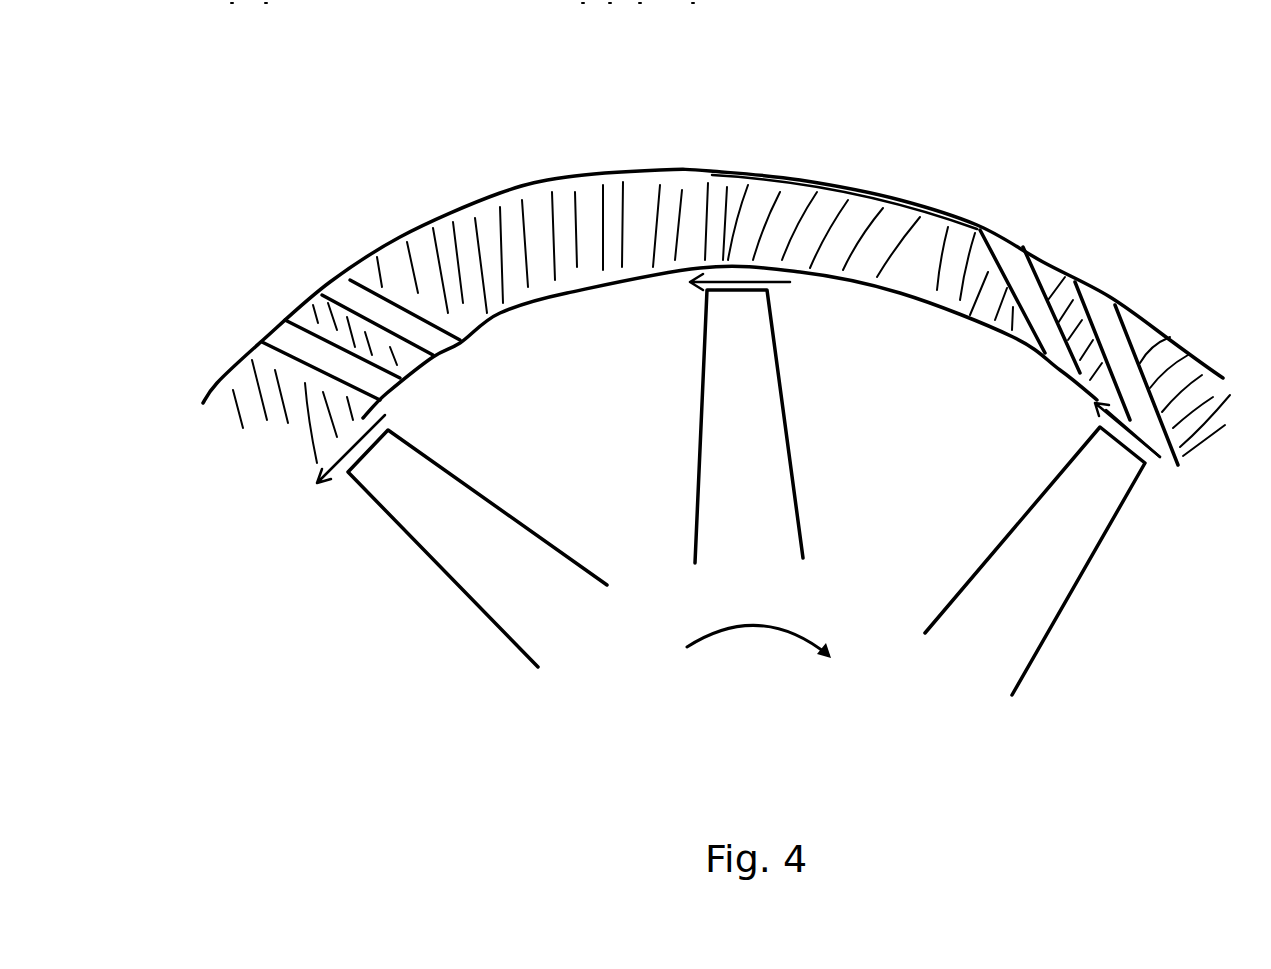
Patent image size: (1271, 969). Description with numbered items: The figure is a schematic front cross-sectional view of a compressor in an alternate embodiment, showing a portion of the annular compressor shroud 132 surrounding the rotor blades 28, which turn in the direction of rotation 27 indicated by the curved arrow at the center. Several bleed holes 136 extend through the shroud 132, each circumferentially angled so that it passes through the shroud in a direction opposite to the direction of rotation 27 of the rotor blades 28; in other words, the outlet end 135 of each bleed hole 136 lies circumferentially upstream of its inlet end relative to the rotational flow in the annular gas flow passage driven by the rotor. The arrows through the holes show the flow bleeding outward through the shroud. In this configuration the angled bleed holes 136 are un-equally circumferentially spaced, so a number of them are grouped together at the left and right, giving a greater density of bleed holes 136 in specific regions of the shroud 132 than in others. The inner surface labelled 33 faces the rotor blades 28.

The shroud 132 is at (637, 180).
The inner surface of ring 33 is at (445, 348).
The outlet end 135 is at (330, 282).
The bleed holes 136 is at (305, 357).
The rotor blades 28 is at (512, 607).
The direction of rotation 27 is at (740, 623).